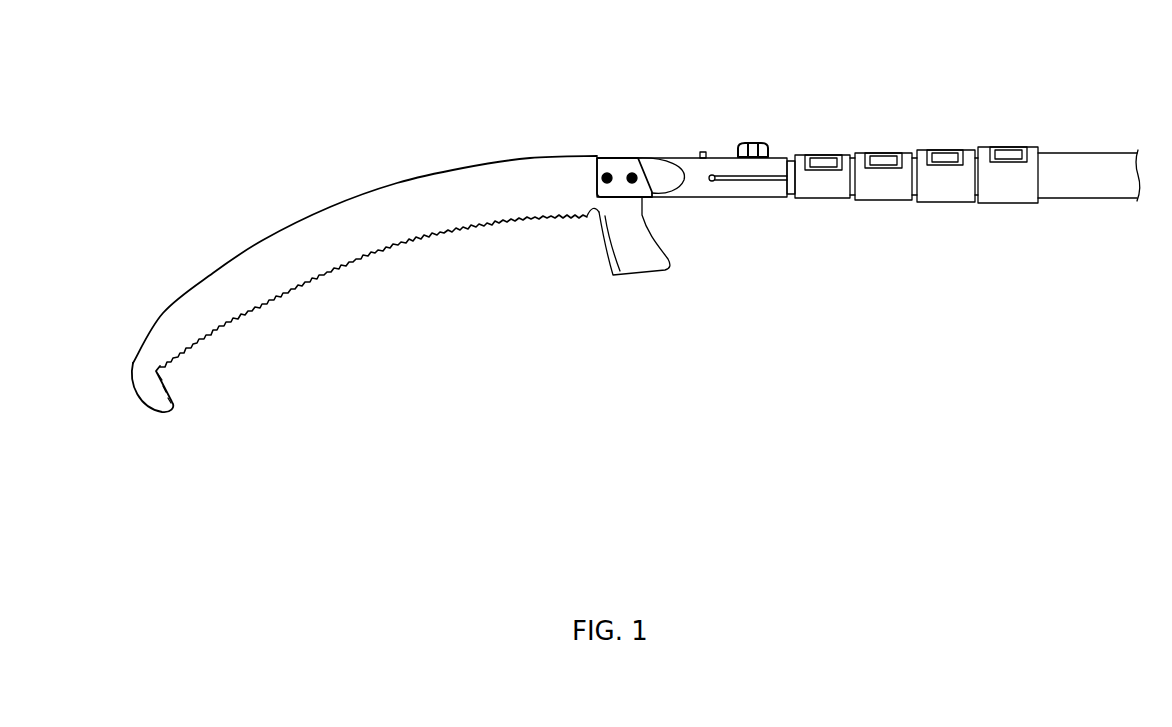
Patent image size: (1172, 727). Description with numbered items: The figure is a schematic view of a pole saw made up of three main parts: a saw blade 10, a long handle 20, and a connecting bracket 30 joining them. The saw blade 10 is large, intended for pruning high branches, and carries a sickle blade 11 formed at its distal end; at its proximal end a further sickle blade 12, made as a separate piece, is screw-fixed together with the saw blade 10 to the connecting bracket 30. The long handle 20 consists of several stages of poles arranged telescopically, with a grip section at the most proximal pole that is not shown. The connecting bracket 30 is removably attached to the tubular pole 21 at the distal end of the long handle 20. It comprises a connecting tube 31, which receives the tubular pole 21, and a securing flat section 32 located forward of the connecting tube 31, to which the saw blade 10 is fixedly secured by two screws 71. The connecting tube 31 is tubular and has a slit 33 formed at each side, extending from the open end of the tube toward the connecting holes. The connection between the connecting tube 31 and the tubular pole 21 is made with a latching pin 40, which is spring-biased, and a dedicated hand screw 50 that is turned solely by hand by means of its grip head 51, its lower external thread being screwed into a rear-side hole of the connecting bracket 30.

The saw blade 10 is at (313, 175).
The sickle blade 11 is at (148, 395).
The sickle blade 12 is at (638, 258).
The long handle 20 is at (965, 160).
The tubular pole 21 is at (790, 198).
The connecting bracket 30 is at (724, 194).
The connecting tube 31 is at (723, 188).
The securing flat section 32 is at (638, 190).
The slit 33 is at (760, 182).
The latching pin 40 is at (702, 152).
The dedicated hand screw 50 is at (802, 99).
The grip head 51 is at (755, 143).
The screw 71 is at (632, 172).